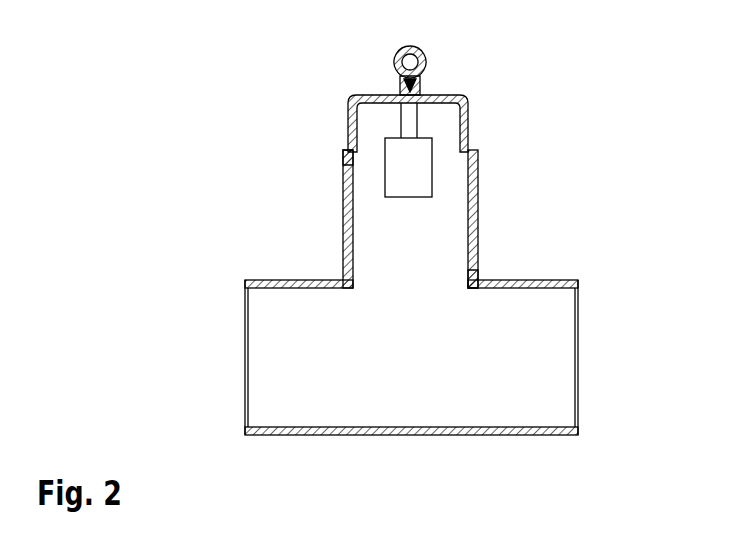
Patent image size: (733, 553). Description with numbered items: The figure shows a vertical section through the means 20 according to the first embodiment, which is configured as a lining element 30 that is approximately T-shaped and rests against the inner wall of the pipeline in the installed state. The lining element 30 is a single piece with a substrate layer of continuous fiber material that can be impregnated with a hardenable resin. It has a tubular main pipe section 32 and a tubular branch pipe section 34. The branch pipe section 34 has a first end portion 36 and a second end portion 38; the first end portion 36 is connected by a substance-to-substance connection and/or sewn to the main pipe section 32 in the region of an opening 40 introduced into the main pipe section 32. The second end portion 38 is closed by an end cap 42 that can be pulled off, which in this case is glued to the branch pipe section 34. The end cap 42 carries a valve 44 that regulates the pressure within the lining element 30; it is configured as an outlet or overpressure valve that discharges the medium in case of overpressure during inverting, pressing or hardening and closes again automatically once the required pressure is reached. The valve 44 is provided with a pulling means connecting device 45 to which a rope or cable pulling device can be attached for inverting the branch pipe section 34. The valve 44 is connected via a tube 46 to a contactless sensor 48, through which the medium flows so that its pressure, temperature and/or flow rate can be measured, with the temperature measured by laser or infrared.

The means 20 is at (537, 70).
The lining element 30 is at (503, 155).
The main pipe section 32 is at (525, 278).
The branch pipe section 34 is at (343, 190).
The first end portion 36 is at (480, 275).
The second end portion 38 is at (345, 155).
The opening 40 is at (373, 283).
The end cap 42 is at (446, 92).
The valve 44 is at (428, 88).
The pulling means connecting device 45 is at (407, 47).
The tube 46 is at (409, 122).
The contactless sensor 48 is at (395, 162).